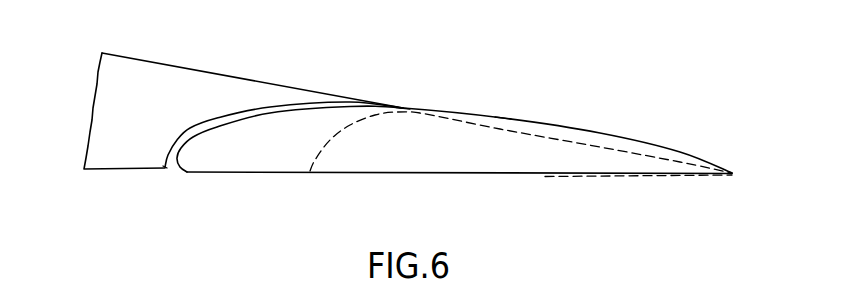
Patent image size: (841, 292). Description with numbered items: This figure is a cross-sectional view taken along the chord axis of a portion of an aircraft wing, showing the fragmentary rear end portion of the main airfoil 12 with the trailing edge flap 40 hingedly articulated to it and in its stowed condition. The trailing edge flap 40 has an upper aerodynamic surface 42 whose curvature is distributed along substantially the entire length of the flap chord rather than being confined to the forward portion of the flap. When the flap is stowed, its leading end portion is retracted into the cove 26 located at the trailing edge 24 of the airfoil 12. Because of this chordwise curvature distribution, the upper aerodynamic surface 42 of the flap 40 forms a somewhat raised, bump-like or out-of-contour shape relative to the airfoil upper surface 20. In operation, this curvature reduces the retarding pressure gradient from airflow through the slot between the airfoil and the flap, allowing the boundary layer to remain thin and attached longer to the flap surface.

The main airfoil 12 is at (146, 60).
The airfoil upper surface 20 is at (270, 82).
The trailing edge 24 is at (403, 108).
The cove 26 is at (165, 167).
The trailing edge flap 40 is at (571, 129).
The upper aerodynamic surface 42 is at (503, 118).